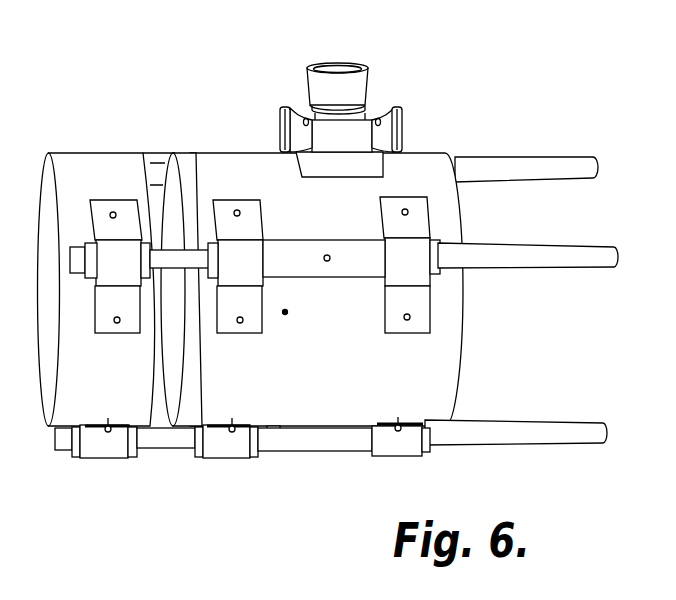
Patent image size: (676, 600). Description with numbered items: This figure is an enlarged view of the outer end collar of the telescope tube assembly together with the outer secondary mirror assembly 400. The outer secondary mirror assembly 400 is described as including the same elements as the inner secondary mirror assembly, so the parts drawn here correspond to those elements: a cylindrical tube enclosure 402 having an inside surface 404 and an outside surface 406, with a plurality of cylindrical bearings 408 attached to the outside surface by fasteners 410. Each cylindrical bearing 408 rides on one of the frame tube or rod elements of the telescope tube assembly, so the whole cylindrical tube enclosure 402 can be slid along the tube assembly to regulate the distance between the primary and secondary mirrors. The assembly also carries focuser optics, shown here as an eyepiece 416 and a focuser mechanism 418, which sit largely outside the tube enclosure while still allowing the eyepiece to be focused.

The outer secondary mirror assembly 400 is at (180, 62).
The cylinder housing 402 is at (464, 222).
The ring 404 is at (173, 380).
The cylinder wall 406 is at (232, 387).
The shaft 408 is at (216, 258).
The bracket 410 is at (228, 207).
The port 416 is at (340, 48).
The cross fitting 418 is at (415, 126).